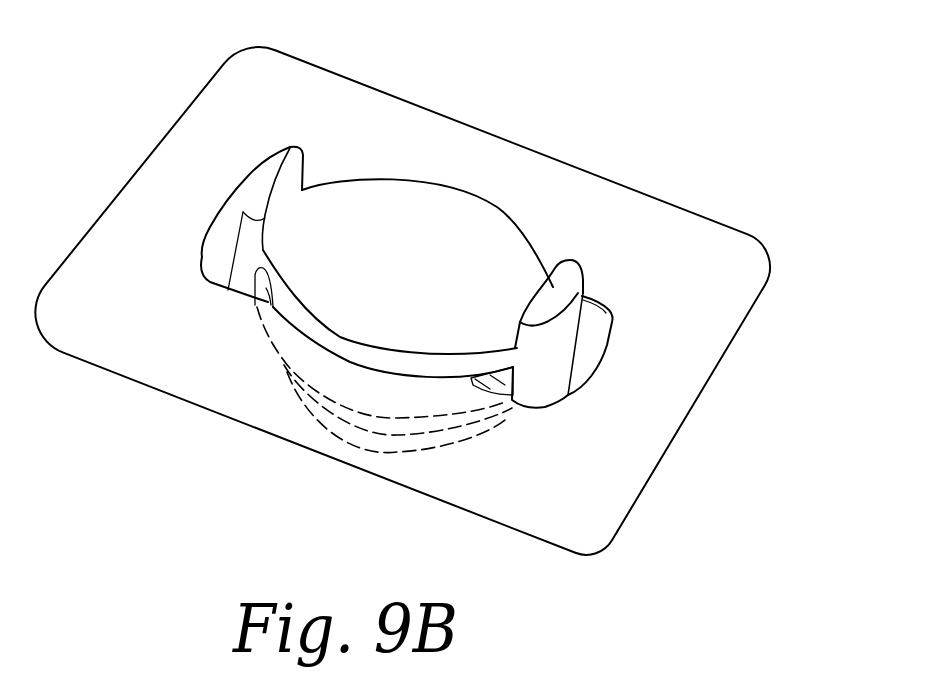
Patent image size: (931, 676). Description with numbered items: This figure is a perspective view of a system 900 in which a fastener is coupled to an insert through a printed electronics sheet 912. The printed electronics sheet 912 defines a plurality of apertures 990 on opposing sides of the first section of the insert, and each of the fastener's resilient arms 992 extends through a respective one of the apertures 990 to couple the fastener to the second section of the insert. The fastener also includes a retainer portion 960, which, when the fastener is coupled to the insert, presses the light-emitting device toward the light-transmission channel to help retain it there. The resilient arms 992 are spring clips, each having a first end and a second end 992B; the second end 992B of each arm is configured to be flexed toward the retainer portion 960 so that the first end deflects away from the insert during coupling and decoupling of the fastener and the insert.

The system 900 is at (439, 301).
The printed electronics sheet 912 is at (568, 162).
The retainer portion 960 is at (397, 217).
The apertures 990 is at (388, 283).
The resilient arms 992 is at (244, 231).
The second end 992B is at (570, 278).